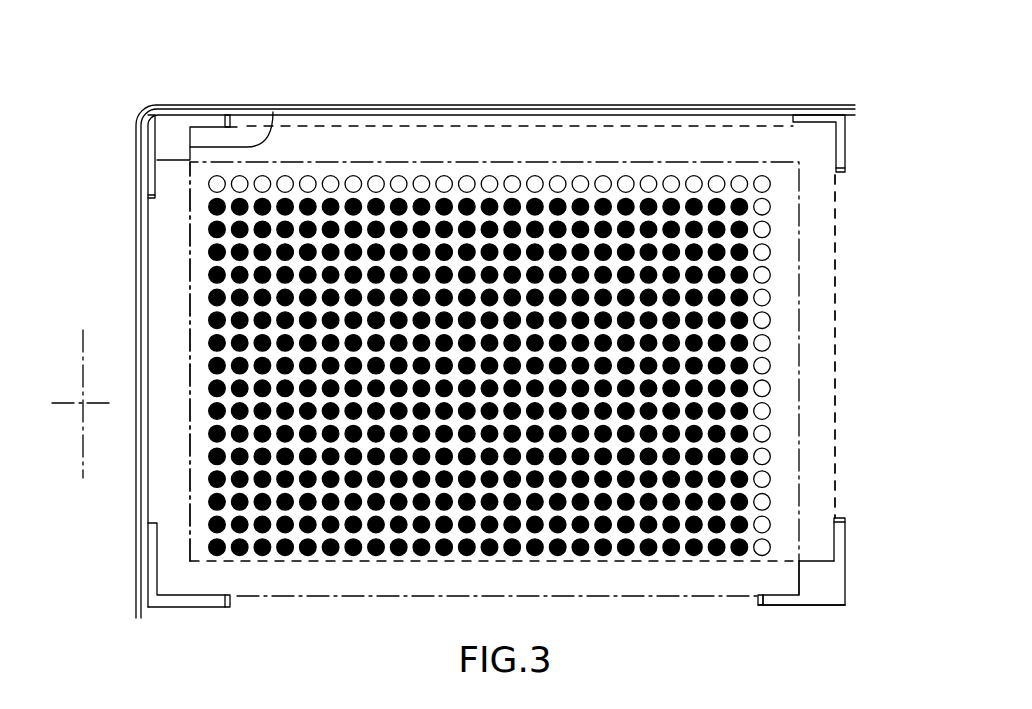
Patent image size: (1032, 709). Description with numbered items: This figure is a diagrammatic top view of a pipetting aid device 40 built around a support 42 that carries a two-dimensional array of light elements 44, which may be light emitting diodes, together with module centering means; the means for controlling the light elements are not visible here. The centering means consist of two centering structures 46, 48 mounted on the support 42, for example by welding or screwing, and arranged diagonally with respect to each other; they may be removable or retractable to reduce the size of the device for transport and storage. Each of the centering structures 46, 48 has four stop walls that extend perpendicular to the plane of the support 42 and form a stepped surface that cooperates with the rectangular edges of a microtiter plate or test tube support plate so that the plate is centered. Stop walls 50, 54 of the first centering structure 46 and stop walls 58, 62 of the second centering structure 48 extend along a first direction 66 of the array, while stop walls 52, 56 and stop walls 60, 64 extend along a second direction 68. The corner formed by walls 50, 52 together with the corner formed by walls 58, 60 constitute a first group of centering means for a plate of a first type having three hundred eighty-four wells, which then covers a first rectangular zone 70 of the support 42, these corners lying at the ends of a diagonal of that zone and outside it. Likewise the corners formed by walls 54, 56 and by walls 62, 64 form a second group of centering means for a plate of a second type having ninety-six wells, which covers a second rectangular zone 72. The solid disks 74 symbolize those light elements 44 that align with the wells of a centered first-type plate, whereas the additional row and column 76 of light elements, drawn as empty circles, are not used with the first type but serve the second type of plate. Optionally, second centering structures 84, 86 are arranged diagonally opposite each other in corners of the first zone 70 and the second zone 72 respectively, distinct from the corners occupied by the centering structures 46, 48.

The pipetting aid device 40 is at (860, 408).
The support 42 is at (463, 118).
The array of light elements 44 is at (587, 547).
The first centering structure 46 is at (160, 133).
The second centering structure 48 is at (821, 600).
The stop wall 50 is at (165, 195).
The stop wall 52 is at (165, 160).
The stop wall 54 is at (273, 112).
The stop wall 56 is at (221, 127).
The stop wall 58 is at (799, 573).
The stop wall 60 is at (782, 604).
The stop wall 62 is at (838, 522).
The stop wall 64 is at (814, 561).
The first direction 66 is at (83, 350).
The second direction 68 is at (70, 403).
The first rectangular zone 70 is at (360, 162).
The second rectangular zone 72 is at (535, 126).
The solid disks 74 is at (361, 548).
The additional row and column of light elements 76 is at (626, 175).
The second centering structure 84 is at (200, 603).
The second centering structure 86 is at (840, 143).